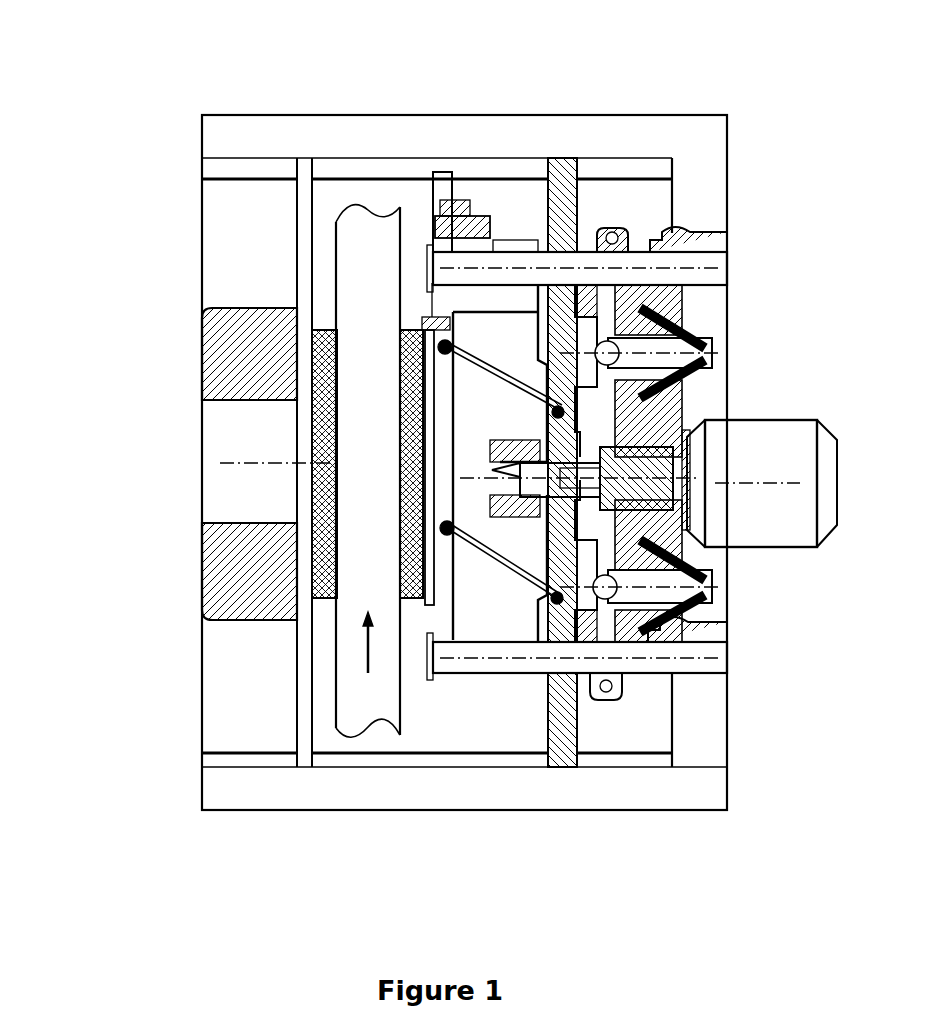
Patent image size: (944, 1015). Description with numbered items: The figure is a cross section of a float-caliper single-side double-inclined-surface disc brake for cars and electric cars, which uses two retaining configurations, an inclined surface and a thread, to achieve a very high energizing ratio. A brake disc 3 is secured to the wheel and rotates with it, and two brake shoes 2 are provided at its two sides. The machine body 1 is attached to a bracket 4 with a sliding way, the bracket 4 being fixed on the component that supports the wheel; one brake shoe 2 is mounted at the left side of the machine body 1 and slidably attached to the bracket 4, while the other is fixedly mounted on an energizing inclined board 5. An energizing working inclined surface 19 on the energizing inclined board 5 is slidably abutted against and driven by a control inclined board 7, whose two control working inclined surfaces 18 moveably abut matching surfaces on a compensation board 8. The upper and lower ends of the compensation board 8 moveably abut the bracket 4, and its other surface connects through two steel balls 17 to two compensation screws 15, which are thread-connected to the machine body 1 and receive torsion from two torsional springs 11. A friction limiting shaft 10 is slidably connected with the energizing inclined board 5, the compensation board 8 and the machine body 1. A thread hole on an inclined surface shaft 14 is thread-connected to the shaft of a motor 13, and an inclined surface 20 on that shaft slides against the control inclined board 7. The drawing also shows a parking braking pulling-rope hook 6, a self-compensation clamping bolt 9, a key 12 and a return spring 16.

The machine body 1 is at (245, 360).
The brake shoe 2 is at (418, 328).
The brake disc 3 is at (353, 267).
The bracket 4 is at (230, 150).
The energizing inclined board 5 is at (432, 315).
The parking braking pulling-rope hook 6 is at (462, 192).
The control inclined board 7 is at (505, 322).
The compensation board 8 is at (577, 210).
The self-compensation clamping bolt 9 is at (612, 238).
The friction limiting shaft 10 is at (685, 268).
The torsional spring 11 is at (728, 263).
The key 12 is at (707, 380).
The motor 13 is at (730, 430).
The inclined surface shaft 14 is at (700, 550).
The compensation screw 15 is at (700, 600).
The return spring 16 is at (615, 646).
The steel ball 17 is at (637, 612).
The control working inclined surface 18 is at (518, 566).
The energizing working inclined surface 19 is at (478, 468).
The inclined surface 20 is at (477, 462).